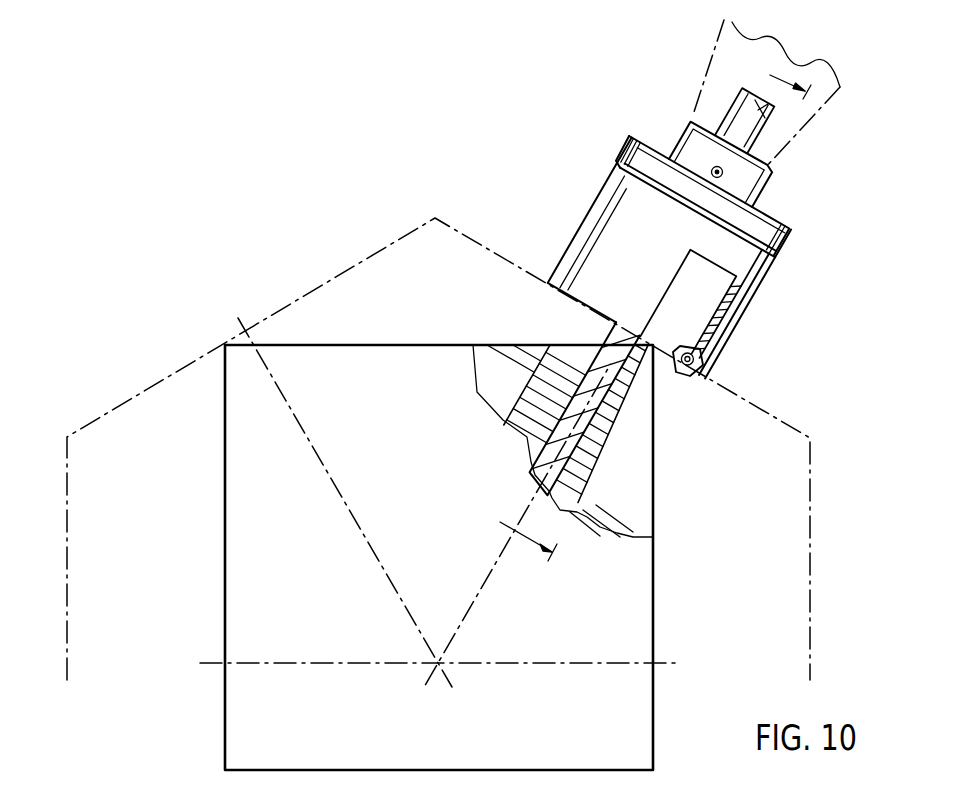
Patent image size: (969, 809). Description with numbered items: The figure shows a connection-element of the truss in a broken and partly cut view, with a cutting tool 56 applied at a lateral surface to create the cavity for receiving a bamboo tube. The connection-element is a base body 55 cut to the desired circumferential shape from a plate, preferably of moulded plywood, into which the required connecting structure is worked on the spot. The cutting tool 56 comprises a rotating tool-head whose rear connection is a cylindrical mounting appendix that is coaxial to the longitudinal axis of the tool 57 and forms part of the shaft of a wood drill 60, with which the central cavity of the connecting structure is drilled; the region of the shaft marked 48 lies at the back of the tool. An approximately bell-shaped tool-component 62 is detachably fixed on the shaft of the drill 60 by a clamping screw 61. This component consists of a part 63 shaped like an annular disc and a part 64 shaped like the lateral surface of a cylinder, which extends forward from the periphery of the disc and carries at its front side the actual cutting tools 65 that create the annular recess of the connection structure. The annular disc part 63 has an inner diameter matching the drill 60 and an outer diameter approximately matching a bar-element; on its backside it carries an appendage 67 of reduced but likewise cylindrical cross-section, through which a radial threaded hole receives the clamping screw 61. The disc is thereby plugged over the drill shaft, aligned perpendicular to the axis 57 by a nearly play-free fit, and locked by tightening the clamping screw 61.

The drive shaft 48 is at (746, 103).
The base body 55 is at (349, 268).
The cutting tool 56 is at (660, 258).
The longitudinal axis of the tool 57 is at (478, 596).
The drill 60 is at (541, 477).
The clamping screw 61 is at (713, 167).
The bell-shaped tool-component 62 is at (628, 137).
The part shaped like an annular disc 63 is at (783, 236).
The part shaped like the lateral surface of a cylinder 64 is at (580, 257).
The cutting tools 65 is at (686, 378).
The appendage 67 is at (757, 178).